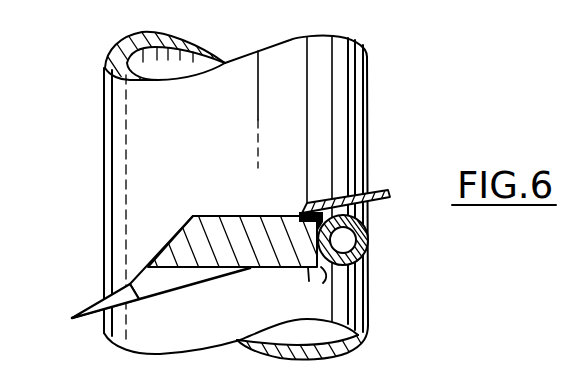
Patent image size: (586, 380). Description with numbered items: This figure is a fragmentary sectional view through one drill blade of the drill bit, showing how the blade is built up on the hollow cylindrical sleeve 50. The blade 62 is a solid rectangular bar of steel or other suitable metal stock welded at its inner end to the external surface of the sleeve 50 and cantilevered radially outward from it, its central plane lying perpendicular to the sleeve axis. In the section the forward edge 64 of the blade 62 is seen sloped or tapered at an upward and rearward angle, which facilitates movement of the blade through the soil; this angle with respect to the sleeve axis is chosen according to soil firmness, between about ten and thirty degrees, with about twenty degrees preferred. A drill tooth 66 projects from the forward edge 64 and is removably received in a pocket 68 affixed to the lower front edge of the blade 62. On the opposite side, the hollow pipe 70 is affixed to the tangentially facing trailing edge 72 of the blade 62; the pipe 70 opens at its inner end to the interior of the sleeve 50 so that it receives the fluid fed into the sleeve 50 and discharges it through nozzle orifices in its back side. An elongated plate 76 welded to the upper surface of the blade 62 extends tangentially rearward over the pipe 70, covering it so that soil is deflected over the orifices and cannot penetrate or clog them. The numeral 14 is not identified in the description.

The tube 14 is at (354, 225).
The hollow cylindrical sleeve 50 is at (366, 93).
The drill blade 62 is at (233, 221).
The forward edge 64 is at (174, 232).
The drill tooth 66 is at (86, 308).
The pocket 68 is at (182, 287).
The hollow pipe 70 is at (358, 244).
The trailing edge 72 is at (326, 271).
The elongated plate 76 is at (378, 189).